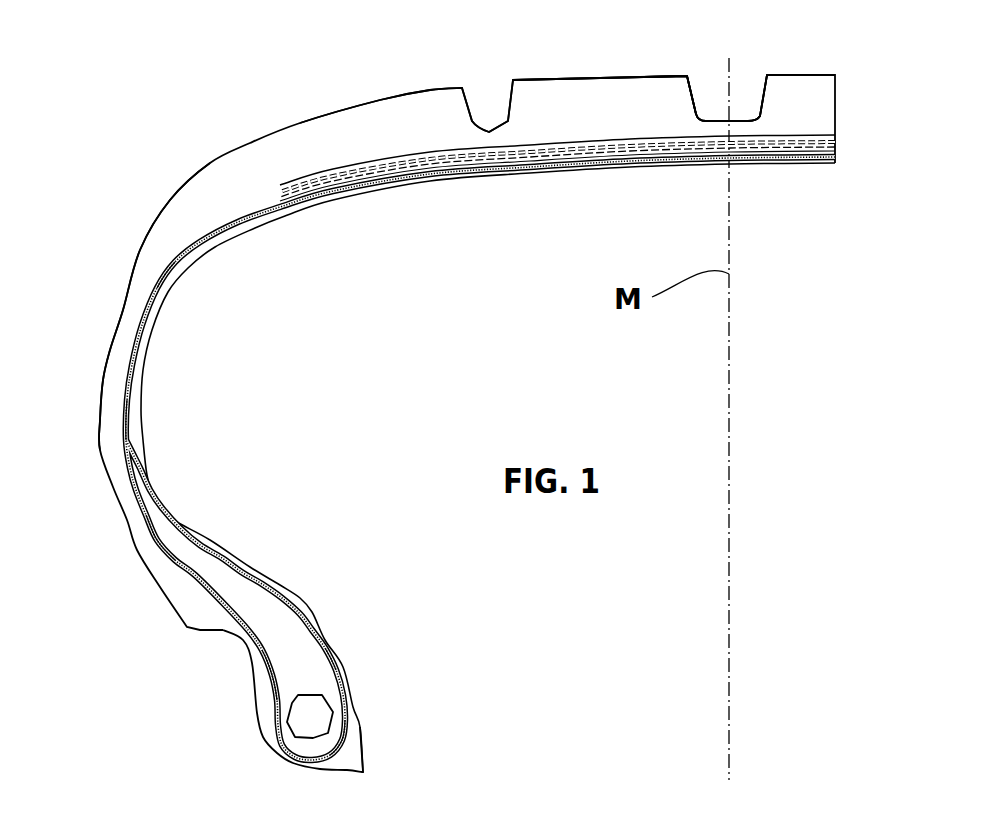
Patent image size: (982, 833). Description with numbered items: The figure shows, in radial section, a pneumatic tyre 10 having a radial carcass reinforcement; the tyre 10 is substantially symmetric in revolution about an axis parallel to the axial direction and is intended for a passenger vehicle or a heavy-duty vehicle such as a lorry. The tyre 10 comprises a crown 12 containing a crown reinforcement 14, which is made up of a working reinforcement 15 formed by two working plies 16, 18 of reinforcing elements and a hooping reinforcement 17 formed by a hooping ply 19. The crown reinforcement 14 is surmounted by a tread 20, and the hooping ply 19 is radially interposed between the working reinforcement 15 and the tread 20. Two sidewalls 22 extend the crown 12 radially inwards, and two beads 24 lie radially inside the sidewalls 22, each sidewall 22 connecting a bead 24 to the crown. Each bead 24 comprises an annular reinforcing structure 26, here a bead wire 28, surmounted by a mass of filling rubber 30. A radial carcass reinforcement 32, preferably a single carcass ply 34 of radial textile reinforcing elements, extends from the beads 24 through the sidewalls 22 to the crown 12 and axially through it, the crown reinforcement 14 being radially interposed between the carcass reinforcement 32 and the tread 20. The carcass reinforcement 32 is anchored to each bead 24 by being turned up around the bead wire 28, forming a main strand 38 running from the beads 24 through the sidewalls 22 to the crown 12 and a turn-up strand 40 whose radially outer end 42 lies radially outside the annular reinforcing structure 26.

The tyre 10 is at (203, 77).
The crown 12 is at (588, 102).
The crown reinforcement 14 is at (672, 96).
The working reinforcement 15 is at (254, 196).
The working ply 16 is at (267, 200).
The hooping reinforcement 17 is at (385, 139).
The working ply 18 is at (237, 217).
The hooping ply 19 is at (330, 172).
The tread 20 is at (402, 93).
The sidewall 22 is at (130, 313).
The bead 24 is at (357, 730).
The annular reinforcing structure 26 is at (348, 742).
The bead wire 28 is at (302, 722).
The mass of filling rubber 30 is at (306, 659).
The carcass reinforcement 32 is at (160, 264).
The carcass ply 34 is at (127, 385).
The main strand 38 is at (337, 653).
The turn-up strand 40 is at (153, 543).
The radially outer end 42 is at (113, 433).